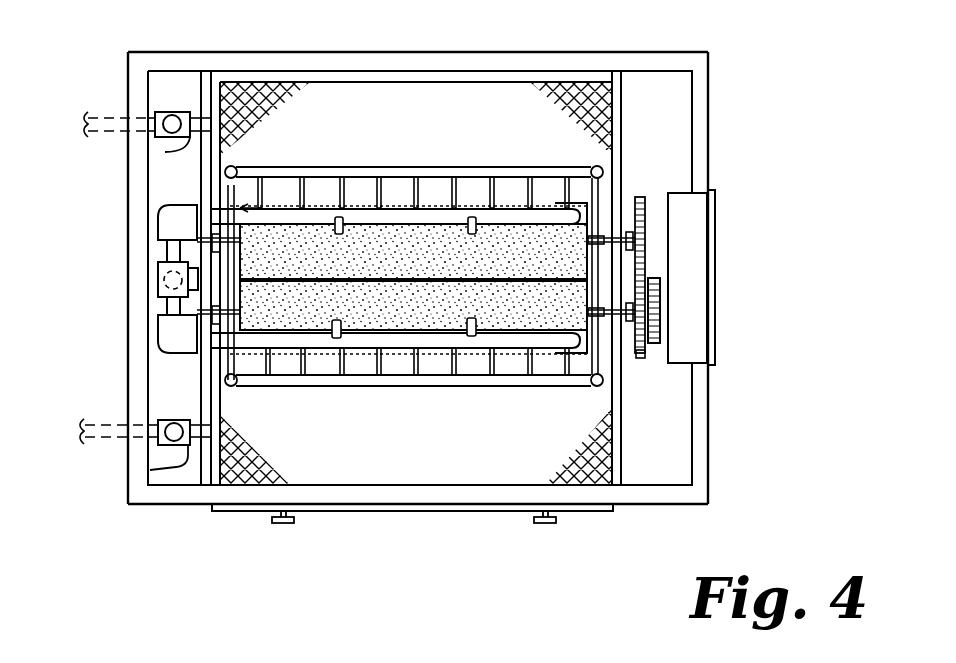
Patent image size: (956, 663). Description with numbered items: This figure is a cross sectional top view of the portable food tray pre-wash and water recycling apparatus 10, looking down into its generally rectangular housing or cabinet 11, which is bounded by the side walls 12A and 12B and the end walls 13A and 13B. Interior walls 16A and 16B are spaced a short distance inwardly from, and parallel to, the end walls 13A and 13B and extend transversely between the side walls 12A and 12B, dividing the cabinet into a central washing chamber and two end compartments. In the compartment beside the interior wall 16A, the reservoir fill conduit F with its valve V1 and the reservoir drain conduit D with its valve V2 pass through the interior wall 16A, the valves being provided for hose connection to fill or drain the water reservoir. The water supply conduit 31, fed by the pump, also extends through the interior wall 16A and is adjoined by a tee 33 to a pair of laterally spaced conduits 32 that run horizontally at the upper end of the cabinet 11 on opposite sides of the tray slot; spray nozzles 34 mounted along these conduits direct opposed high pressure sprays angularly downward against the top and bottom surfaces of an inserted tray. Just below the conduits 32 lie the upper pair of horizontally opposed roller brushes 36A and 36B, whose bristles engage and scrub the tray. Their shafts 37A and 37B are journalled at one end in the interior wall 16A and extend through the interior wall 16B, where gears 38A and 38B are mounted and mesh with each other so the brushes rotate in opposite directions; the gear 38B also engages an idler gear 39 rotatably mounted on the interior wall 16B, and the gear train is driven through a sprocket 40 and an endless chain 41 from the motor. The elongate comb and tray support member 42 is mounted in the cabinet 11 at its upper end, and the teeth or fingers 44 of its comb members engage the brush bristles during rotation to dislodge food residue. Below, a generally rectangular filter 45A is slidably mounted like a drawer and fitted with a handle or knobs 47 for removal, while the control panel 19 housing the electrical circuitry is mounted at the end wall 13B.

The portable food tray pre-wash and water recycling apparatus 10 is at (752, 70).
The housing or cabinet 11 is at (712, 118).
The side wall 12A is at (165, 505).
The side wall 12B is at (402, 52).
The end wall 13A is at (128, 372).
The end wall 13B is at (708, 428).
The interior wall 16A is at (210, 157).
The interior wall 16B is at (620, 112).
The control panel 19 is at (706, 222).
The water supply conduit 31 is at (158, 283).
The laterally spaced conduits 32 is at (393, 222).
The tee 33 is at (158, 272).
The spray nozzles 34 is at (338, 218).
The roller brush 36A is at (432, 322).
The roller brush 36B is at (432, 266).
The shaft 37A is at (212, 300).
The shaft 37B is at (208, 264).
The gear 38A is at (642, 356).
The gear 38B is at (645, 248).
The idler gear 39 is at (645, 200).
The sprocket 40 is at (660, 330).
The endless chain 41 is at (654, 310).
The comb and tray support member 42 is at (563, 387).
The teeth or fingers 44 is at (264, 200).
The filter 45A is at (240, 511).
The handle or knobs 47 is at (284, 524).
The valve V1 is at (158, 116).
The valve V2 is at (166, 420).
The reservoir fill conduit F is at (160, 152).
The reservoir drain conduit D is at (150, 470).